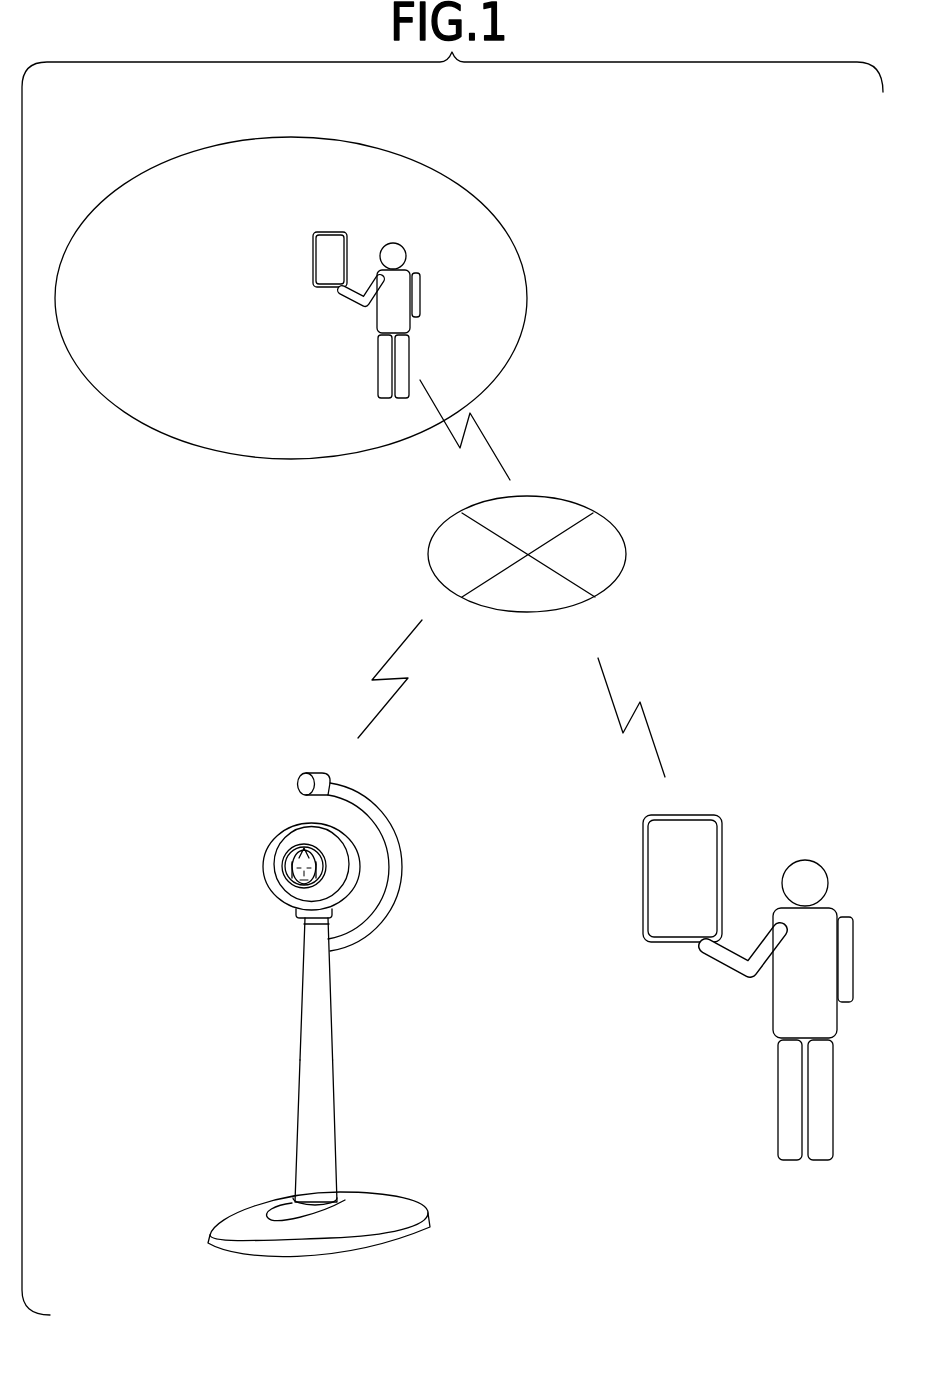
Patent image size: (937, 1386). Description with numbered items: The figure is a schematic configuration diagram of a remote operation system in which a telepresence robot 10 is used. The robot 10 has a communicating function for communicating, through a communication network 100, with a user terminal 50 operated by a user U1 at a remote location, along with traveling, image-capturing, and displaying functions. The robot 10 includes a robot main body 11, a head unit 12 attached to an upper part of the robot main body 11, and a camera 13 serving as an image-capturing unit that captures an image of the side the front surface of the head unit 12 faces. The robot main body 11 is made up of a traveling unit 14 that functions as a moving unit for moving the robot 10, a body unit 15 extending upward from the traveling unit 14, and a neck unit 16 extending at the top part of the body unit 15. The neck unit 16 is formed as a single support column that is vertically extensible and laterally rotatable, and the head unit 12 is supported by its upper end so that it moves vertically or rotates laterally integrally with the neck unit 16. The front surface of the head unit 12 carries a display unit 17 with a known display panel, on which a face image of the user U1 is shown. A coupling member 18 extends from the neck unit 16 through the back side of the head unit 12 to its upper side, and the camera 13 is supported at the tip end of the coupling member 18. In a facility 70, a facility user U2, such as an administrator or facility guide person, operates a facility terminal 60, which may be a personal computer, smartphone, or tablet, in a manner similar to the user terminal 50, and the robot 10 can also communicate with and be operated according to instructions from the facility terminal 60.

The robot 10 is at (223, 848).
The robot main body 11 is at (337, 1032).
The head unit 12 is at (271, 839).
The camera 13 is at (315, 772).
The traveling unit 14 is at (400, 1210).
The body unit 15 is at (298, 1123).
The neck unit 16 is at (302, 993).
The display unit 17 is at (283, 866).
The coupling member 18 is at (390, 837).
The user terminal 50 is at (700, 813).
The facility terminal 60 is at (330, 229).
The facility 70 is at (430, 166).
The communication network 100 is at (558, 496).
The user U1 is at (773, 1000).
The facility user U2 is at (422, 290).